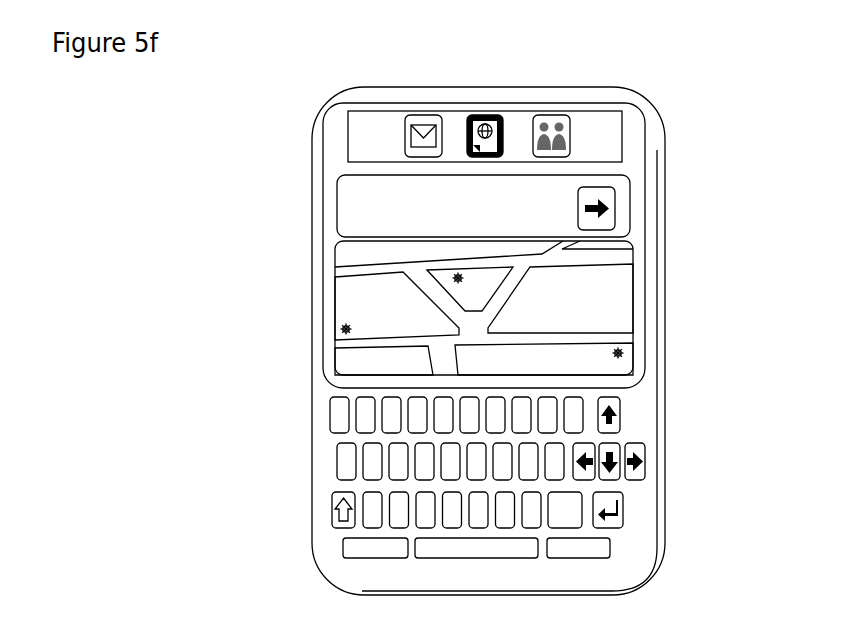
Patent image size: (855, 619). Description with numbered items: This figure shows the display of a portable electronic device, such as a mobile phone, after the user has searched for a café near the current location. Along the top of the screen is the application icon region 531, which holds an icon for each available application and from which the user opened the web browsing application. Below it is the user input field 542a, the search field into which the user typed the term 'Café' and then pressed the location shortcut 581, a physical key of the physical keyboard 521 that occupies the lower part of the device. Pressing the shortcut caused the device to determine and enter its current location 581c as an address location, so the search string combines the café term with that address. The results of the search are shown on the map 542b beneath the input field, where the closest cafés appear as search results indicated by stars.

The application icon region 531 is at (372, 130).
The user input field 542a is at (345, 207).
The map 542b is at (352, 297).
The current location 581c is at (508, 203).
The physical keyboard 521 is at (337, 452).
The location shortcut 581 is at (598, 545).